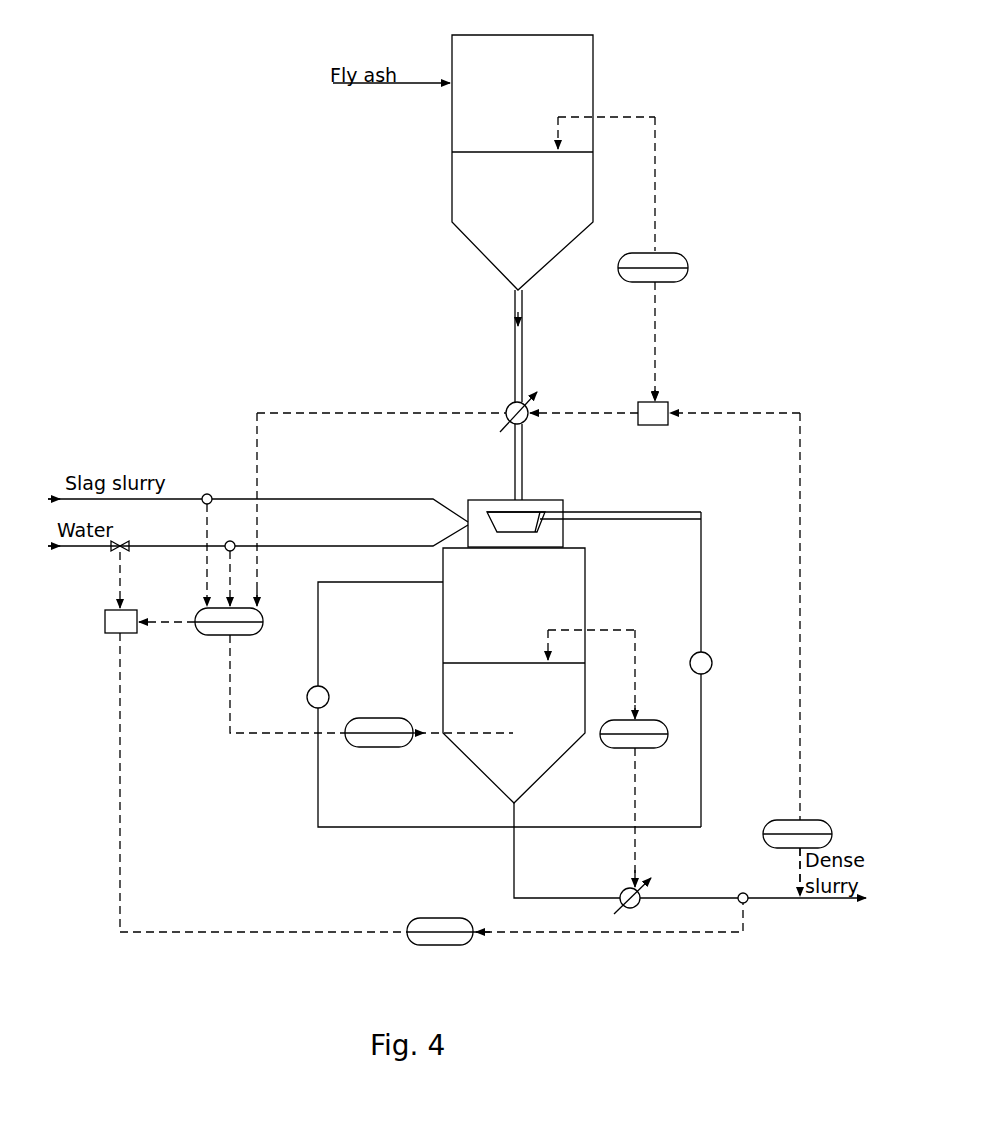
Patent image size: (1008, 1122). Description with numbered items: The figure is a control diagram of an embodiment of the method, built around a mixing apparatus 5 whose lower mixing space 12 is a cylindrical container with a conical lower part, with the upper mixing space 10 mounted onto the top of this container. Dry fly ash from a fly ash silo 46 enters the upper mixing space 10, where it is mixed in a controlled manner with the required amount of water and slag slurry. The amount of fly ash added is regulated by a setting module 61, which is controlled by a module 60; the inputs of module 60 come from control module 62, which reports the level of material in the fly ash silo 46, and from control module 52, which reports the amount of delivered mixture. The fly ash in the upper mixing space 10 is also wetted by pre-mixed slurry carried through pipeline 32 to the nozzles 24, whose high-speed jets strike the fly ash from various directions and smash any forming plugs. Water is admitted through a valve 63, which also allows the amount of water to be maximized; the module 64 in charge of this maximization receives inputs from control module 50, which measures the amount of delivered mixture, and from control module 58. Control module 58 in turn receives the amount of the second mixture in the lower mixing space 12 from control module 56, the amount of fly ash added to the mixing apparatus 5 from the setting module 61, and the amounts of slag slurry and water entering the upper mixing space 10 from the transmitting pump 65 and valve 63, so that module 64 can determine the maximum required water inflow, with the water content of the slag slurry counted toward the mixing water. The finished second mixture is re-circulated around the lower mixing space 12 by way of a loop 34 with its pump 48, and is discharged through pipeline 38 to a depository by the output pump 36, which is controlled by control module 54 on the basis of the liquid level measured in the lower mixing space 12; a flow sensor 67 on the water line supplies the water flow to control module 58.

The mixing apparatus 5 is at (568, 486).
The upper mixing space 10 is at (566, 507).
The lower mixing space 12 is at (585, 598).
The nozzles 24 is at (563, 507).
The pipeline 32 is at (701, 617).
The recirculation loop 34 is at (403, 828).
The pump 36 is at (638, 908).
The pipeline 38 is at (695, 898).
The fly ash silo 46 is at (593, 70).
The pump 48 is at (312, 706).
The control module 50 is at (445, 947).
The control module 52 is at (825, 820).
The control module 54 is at (668, 730).
The control module 56 is at (385, 747).
The control module 58 is at (203, 636).
The module 60 is at (663, 402).
The setting module 61 is at (506, 406).
The control module 62 is at (680, 258).
The valve 63 is at (116, 553).
The module 64 is at (107, 633).
The pump 65 is at (207, 494).
The water flow sensor 67 is at (232, 541).